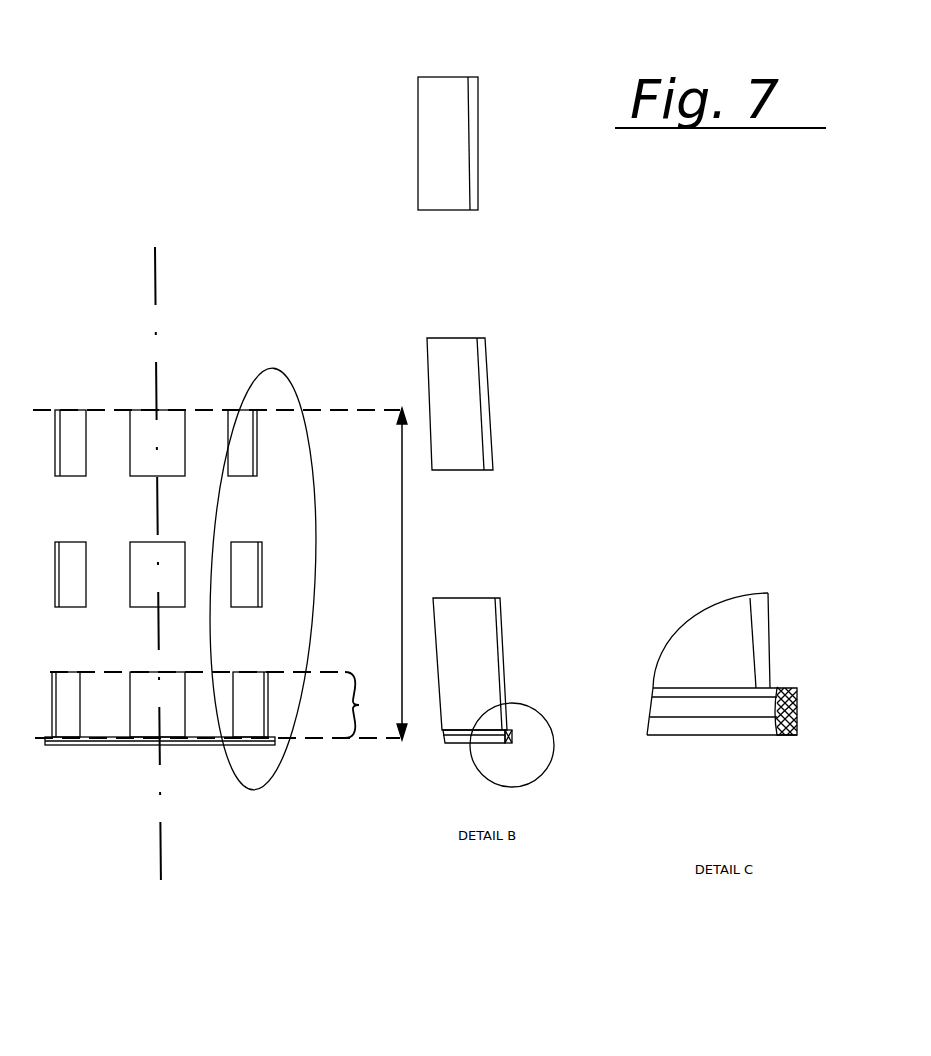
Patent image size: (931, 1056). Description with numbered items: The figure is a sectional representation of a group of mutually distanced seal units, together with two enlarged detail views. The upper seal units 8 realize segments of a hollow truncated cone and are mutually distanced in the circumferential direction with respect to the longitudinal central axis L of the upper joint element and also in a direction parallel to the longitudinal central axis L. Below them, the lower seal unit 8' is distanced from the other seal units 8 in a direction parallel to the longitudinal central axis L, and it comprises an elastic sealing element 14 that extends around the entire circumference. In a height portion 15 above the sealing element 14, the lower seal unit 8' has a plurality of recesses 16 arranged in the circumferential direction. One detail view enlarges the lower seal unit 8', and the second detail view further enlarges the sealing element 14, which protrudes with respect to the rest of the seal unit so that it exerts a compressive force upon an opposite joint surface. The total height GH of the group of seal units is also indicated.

The seal unit 8 is at (281, 374).
The lower seal unit 8' is at (263, 570).
The elastic sealing element 14 is at (490, 742).
The height portion 15 is at (223, 705).
The recess 16 is at (104, 697).
The longitudinal central axis L is at (156, 275).
The total height GH is at (385, 574).